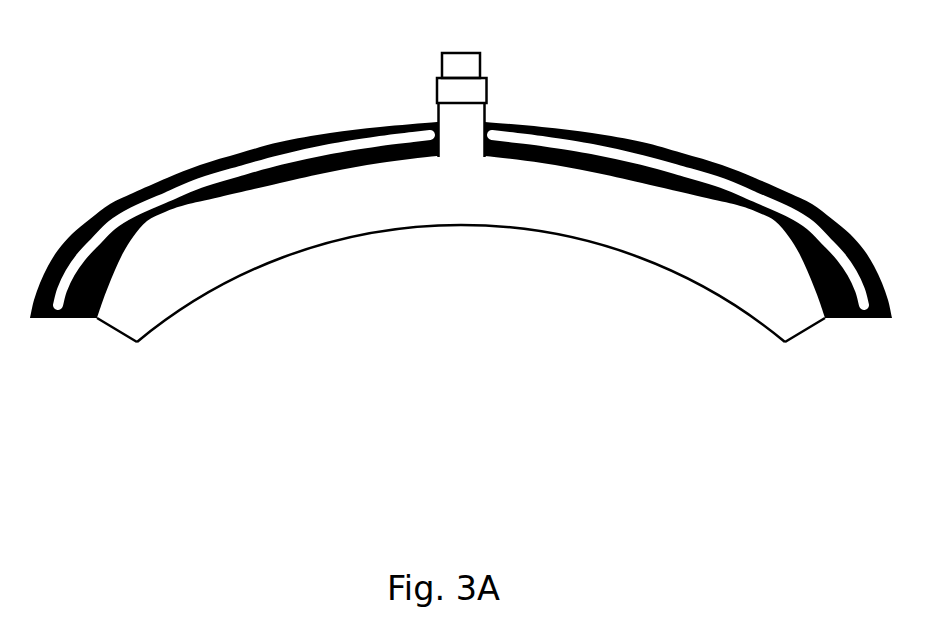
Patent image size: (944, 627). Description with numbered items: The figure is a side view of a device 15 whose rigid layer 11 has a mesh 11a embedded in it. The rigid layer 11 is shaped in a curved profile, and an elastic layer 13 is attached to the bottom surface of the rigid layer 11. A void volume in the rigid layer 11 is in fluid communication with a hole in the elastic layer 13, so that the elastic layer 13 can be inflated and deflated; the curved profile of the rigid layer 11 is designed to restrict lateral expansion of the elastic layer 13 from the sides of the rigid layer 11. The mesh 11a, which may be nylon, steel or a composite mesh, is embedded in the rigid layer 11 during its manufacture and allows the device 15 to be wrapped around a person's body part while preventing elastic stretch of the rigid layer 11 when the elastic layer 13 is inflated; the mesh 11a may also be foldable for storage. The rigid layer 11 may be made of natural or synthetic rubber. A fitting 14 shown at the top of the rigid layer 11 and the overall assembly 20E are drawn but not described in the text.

The rigid layer 11 is at (780, 183).
The mesh 11a is at (147, 208).
The elastic layer 13 is at (595, 245).
The connector 14 is at (480, 68).
The device 15 is at (248, 408).
The headband 20E is at (662, 102).